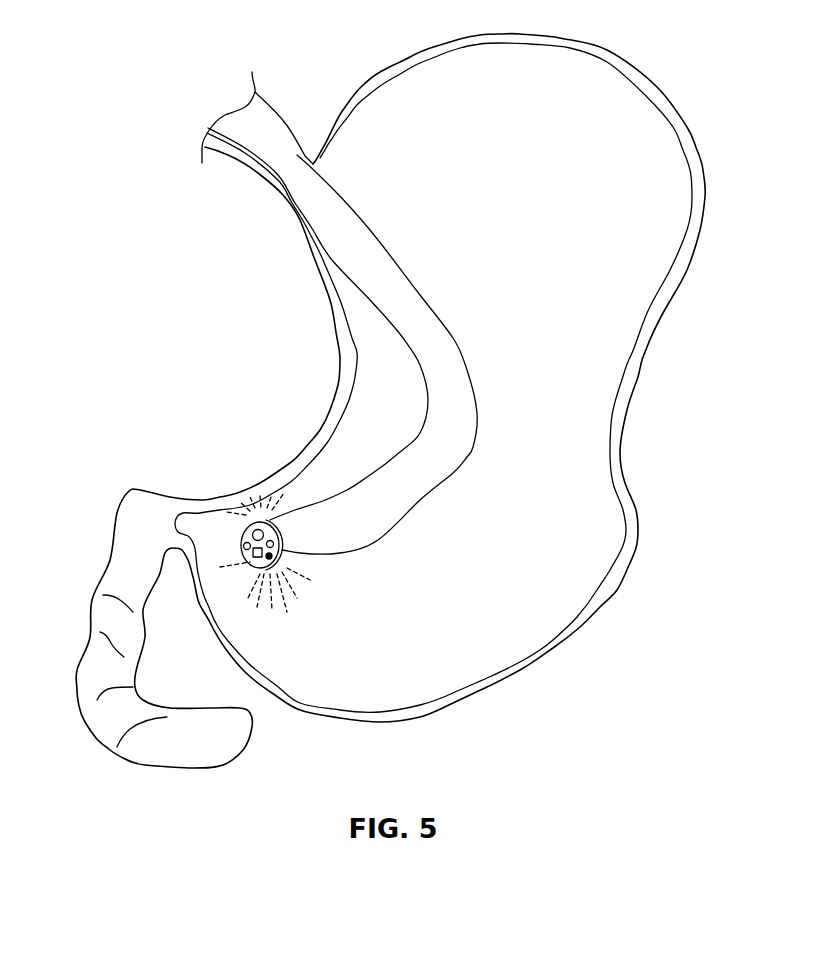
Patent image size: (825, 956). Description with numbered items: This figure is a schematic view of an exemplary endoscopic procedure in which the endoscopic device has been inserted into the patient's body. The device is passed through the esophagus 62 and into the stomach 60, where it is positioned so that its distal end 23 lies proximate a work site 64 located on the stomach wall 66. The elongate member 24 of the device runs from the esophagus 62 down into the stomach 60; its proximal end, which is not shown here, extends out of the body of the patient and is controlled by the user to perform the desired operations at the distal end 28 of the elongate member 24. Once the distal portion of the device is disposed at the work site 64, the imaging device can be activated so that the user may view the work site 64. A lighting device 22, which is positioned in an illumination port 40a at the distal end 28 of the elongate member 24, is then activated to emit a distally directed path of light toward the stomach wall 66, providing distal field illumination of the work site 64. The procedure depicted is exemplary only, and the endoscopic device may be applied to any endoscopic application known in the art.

The stomach 60 is at (648, 147).
The stomach wall 66 is at (633, 360).
The esophagus 62 is at (286, 125).
The elongate member 24 is at (470, 457).
The work site 64 is at (205, 608).
The lighting device 22 is at (268, 568).
The distal end 28 is at (270, 520).
The illumination port 40a is at (283, 548).
The distal end 23 is at (386, 549).